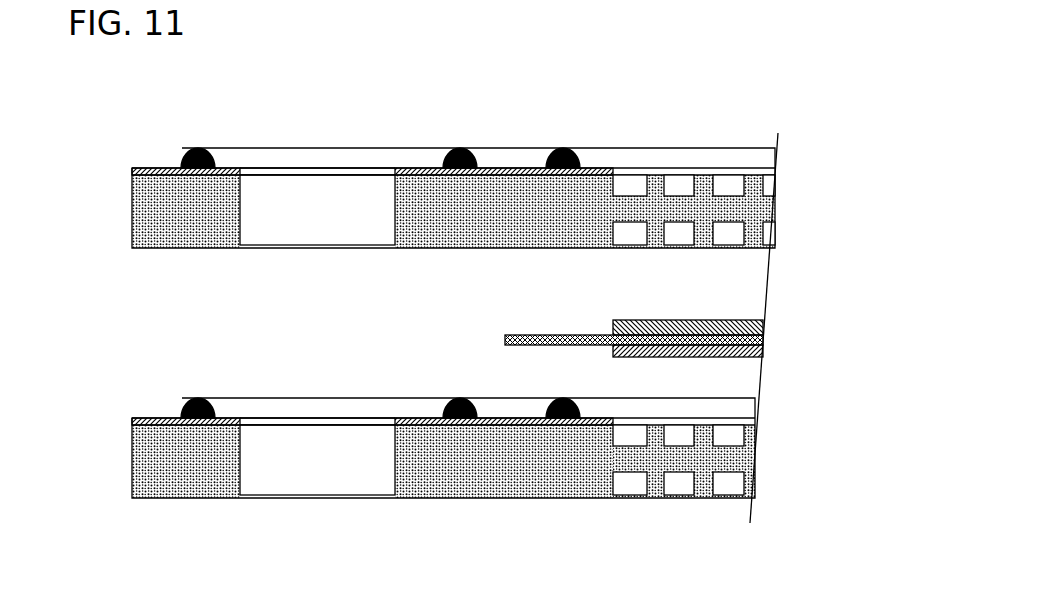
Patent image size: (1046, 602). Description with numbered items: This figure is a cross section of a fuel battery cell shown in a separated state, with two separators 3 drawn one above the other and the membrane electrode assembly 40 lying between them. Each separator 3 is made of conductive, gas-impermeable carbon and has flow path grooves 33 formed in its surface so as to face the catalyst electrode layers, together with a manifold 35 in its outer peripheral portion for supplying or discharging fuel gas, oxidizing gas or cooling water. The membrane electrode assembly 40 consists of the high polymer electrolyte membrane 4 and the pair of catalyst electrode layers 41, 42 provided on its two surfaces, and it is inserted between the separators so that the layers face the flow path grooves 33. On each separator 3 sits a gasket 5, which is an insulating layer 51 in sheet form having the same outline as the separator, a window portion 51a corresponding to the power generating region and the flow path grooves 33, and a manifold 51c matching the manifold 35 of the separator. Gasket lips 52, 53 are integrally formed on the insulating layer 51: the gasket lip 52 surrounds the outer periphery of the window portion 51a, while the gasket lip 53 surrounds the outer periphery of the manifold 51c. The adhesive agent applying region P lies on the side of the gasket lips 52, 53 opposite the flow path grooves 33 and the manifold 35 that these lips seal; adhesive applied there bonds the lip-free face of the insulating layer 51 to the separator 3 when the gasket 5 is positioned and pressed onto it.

The separator 3 is at (500, 252).
The manifold 35 is at (296, 234).
The insulating layer 51 is at (422, 170).
The manifold 51c is at (312, 172).
The window portion 51a is at (680, 187).
The flow path groove 33 is at (727, 233).
The gasket lip 53 is at (203, 148).
The gasket 5 is at (466, 129).
The gasket lip 52 is at (563, 156).
The adhesive agent applying region P is at (135, 161).
The high polymer electrolyte membrane 4 is at (548, 334).
The catalyst electrode layer 41 is at (693, 320).
The catalyst electrode layer 42 is at (695, 357).
The membrane electrode assembly 40 is at (770, 341).